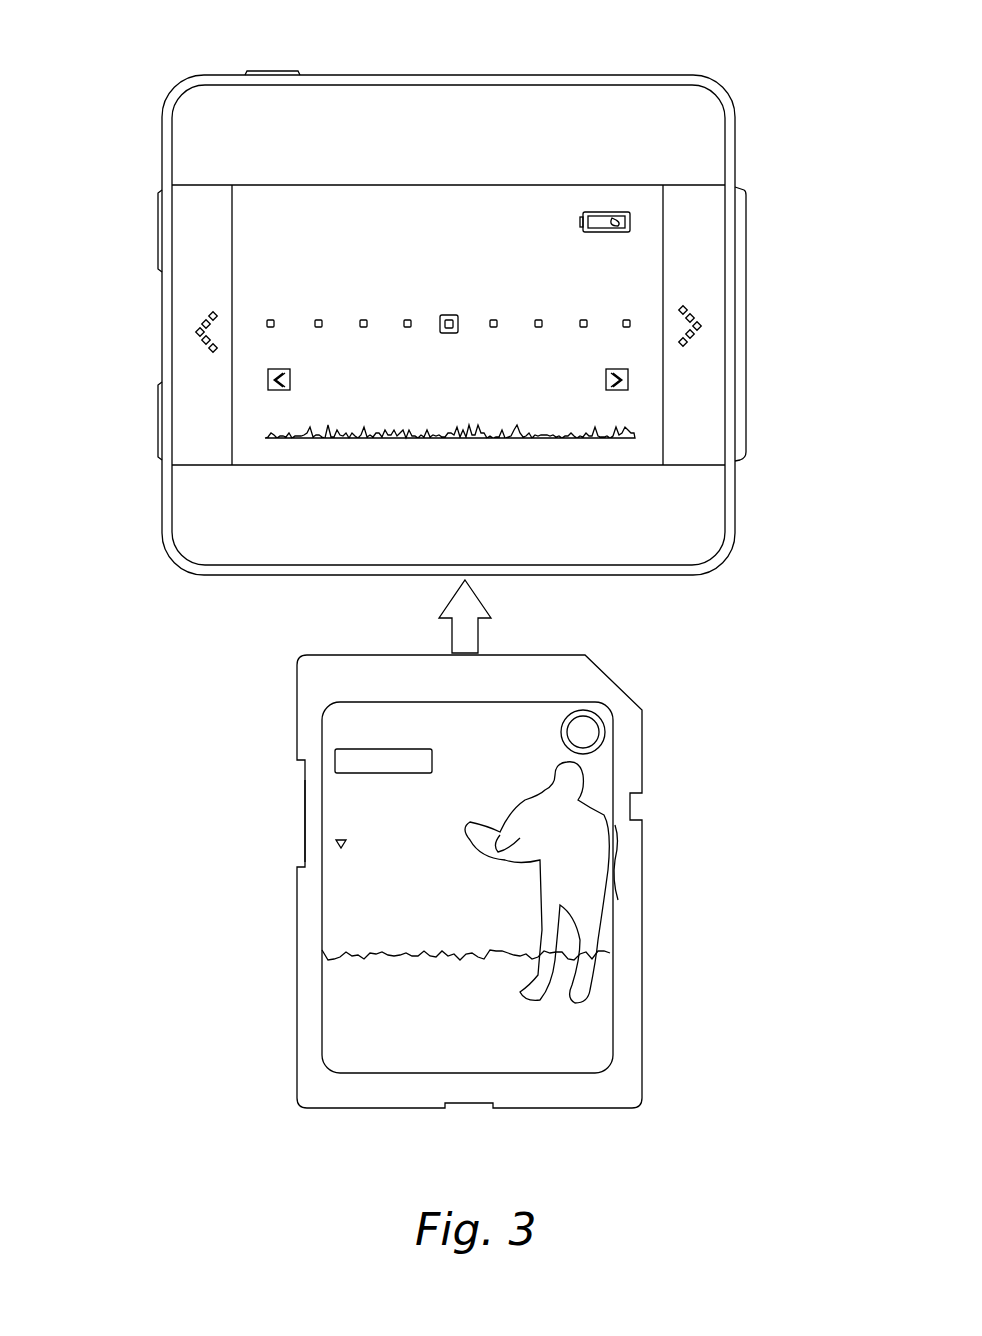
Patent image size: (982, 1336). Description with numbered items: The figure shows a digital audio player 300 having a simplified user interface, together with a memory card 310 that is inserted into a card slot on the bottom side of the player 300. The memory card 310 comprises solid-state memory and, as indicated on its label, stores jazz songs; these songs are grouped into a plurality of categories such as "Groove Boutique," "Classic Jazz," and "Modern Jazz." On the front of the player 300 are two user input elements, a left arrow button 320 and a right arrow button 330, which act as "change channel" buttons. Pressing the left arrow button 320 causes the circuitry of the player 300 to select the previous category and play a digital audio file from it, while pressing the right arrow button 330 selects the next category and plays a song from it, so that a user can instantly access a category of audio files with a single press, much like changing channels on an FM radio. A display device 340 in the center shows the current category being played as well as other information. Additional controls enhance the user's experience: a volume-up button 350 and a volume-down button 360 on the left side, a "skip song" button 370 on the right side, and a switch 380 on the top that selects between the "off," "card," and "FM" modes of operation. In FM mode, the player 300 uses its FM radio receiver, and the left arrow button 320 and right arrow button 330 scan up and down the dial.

The digital audio player 300 is at (735, 105).
The memory card 310 is at (642, 935).
The left arrow button 320 is at (192, 290).
The right arrow button 330 is at (707, 393).
The display device 340 is at (432, 186).
The volume-up button 350 is at (158, 240).
The volume-down button 360 is at (158, 422).
The skip song button 370 is at (746, 312).
The switch 380 is at (283, 72).